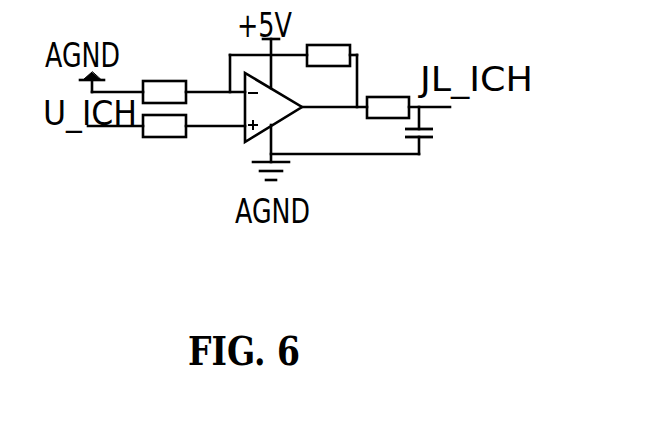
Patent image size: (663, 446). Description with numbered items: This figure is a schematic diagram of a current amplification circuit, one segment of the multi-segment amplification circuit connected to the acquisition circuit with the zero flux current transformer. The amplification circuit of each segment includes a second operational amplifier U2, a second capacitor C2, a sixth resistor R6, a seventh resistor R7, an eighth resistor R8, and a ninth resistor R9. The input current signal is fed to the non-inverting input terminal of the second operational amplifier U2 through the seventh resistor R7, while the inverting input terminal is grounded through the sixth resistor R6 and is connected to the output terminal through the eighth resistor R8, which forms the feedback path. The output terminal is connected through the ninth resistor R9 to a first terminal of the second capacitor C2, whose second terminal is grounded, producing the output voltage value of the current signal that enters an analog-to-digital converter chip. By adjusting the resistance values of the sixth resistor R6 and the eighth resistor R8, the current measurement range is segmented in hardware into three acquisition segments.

The sixth resistor R6 is at (164, 74).
The seventh resistor R7 is at (165, 148).
The eighth resistor R8 is at (328, 35).
The ninth resistor R9 is at (388, 88).
The second operational amplifier U2 is at (287, 106).
The second capacitor C2 is at (441, 140).